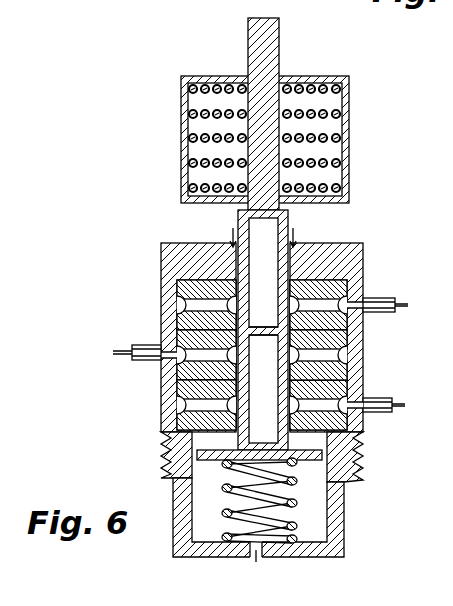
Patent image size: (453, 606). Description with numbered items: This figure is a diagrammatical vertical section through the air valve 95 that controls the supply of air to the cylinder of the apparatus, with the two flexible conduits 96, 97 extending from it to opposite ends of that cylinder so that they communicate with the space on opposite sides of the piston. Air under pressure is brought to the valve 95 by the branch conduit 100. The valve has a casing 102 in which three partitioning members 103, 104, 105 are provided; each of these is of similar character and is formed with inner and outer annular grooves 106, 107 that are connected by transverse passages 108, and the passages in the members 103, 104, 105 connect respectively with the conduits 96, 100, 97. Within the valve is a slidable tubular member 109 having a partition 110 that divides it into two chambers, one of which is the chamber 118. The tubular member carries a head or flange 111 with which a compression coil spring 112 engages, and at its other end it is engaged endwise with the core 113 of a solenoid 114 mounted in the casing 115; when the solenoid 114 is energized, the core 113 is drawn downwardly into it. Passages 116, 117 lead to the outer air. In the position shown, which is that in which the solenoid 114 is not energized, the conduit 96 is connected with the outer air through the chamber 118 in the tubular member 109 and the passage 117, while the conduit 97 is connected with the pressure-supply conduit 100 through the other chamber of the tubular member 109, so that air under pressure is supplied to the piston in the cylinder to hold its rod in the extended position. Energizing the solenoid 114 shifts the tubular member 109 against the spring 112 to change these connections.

The valve 95 is at (363, 358).
The flexible conduit 96 is at (390, 305).
The flexible conduit 97 is at (386, 413).
The branch conduit 100 is at (116, 347).
The casing 102 is at (162, 392).
The partitioning member 103 is at (362, 272).
The partitioning member 104 is at (363, 378).
The partitioning member 105 is at (363, 398).
The inner annular groove 106 is at (174, 438).
The outer annular groove 107 is at (182, 305).
The transverse passage 108 is at (185, 285).
The slidable tubular member 109 is at (140, 340).
The partition 110 is at (345, 347).
The head or flange 111 is at (322, 495).
The compression coil spring 112 is at (300, 505).
The core 113 is at (277, 37).
The solenoid 114 is at (340, 114).
The casing 115 is at (350, 153).
The passage 116 is at (262, 558).
The passage 117 is at (295, 233).
The chamber 118 is at (262, 268).